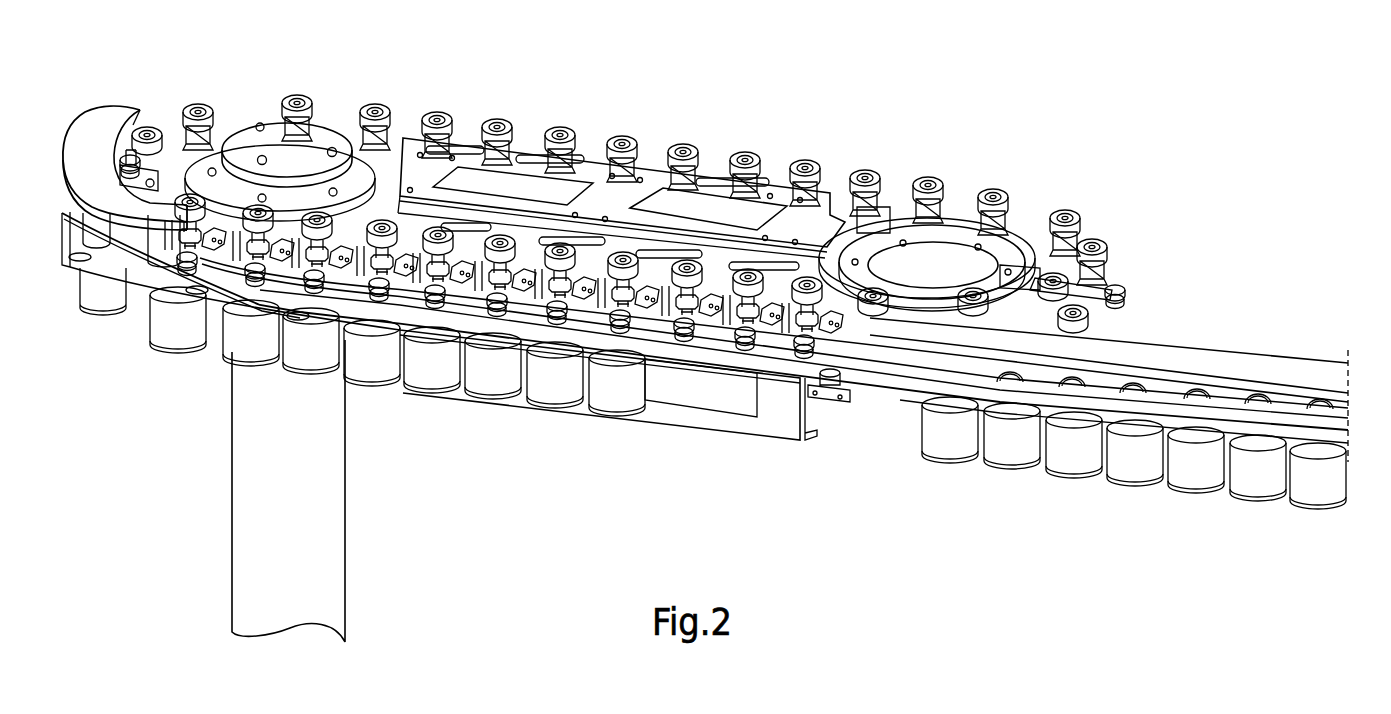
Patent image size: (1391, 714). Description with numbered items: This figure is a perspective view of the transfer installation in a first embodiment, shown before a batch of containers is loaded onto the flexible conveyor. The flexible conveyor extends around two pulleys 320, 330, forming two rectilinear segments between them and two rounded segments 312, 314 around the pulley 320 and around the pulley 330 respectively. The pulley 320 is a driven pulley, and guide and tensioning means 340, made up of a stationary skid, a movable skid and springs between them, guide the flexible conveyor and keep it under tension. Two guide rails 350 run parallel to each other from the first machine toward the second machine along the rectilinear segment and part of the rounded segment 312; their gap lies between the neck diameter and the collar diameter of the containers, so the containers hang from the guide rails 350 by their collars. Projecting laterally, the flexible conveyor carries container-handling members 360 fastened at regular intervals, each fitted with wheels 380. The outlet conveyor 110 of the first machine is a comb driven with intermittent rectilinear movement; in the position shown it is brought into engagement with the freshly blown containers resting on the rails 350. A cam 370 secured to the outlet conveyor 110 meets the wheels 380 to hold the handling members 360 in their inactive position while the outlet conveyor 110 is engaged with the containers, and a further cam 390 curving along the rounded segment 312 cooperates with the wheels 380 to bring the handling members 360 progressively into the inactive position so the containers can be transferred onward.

The outlet conveyor 110 is at (1203, 413).
The rounded segment 312 is at (143, 180).
The rounded segment 314 is at (1003, 320).
The pulley 320 is at (248, 143).
The pulley 330 is at (953, 260).
The guide and tensioning means 340 is at (467, 170).
The guide rails 350 is at (835, 372).
The container-handling members 360 is at (833, 187).
The cam 370 is at (1193, 360).
The wheels 380 is at (607, 137).
The cam 390 is at (112, 122).